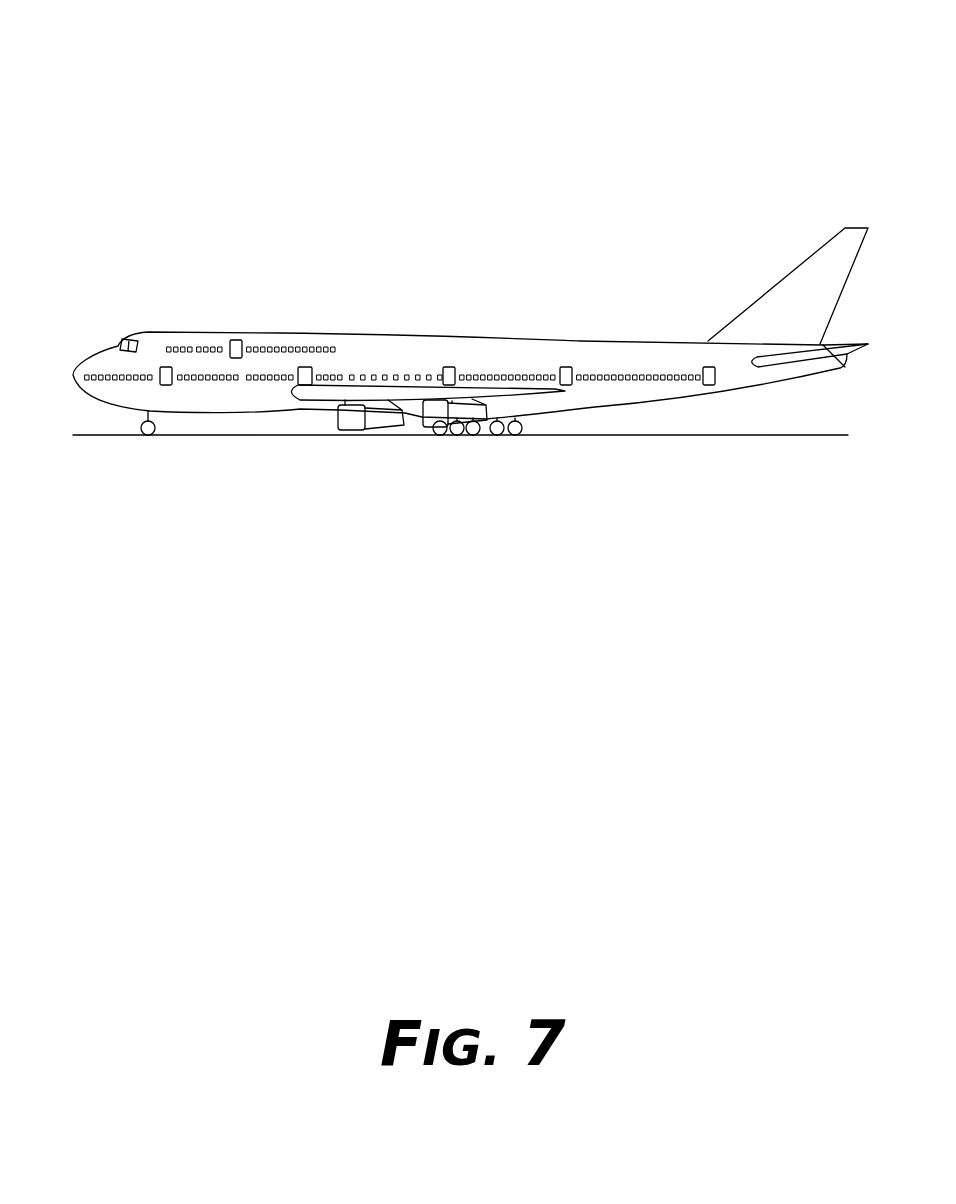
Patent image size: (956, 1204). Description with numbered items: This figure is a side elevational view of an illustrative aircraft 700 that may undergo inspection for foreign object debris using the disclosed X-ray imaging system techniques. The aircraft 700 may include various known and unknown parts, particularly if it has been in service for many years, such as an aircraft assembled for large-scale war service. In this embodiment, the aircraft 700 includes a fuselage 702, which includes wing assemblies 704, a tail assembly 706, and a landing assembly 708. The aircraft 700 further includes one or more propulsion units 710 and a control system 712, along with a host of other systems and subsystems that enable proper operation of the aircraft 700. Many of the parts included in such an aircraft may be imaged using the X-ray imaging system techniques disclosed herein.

The aircraft 700 is at (196, 38).
The fuselage 702 is at (595, 407).
The wing assemblies 704 is at (315, 397).
The tail assembly 706 is at (774, 248).
The landing assembly 708 is at (457, 458).
The propulsion units 710 is at (347, 425).
The control system 712 is at (66, 408).